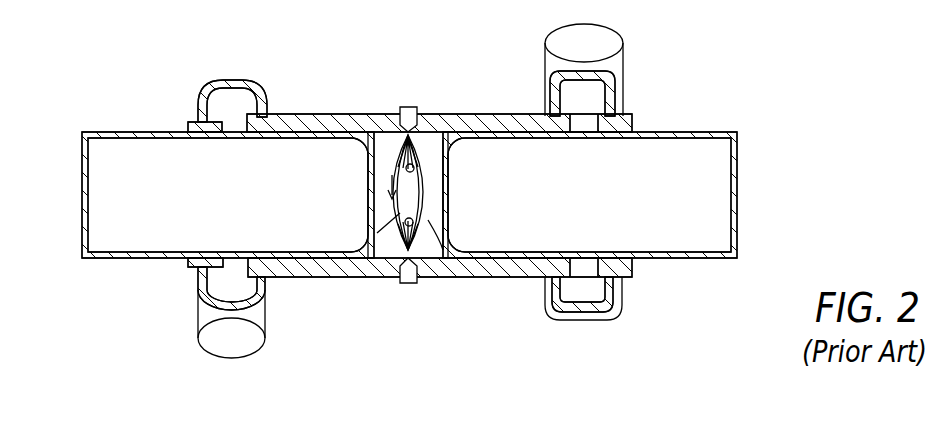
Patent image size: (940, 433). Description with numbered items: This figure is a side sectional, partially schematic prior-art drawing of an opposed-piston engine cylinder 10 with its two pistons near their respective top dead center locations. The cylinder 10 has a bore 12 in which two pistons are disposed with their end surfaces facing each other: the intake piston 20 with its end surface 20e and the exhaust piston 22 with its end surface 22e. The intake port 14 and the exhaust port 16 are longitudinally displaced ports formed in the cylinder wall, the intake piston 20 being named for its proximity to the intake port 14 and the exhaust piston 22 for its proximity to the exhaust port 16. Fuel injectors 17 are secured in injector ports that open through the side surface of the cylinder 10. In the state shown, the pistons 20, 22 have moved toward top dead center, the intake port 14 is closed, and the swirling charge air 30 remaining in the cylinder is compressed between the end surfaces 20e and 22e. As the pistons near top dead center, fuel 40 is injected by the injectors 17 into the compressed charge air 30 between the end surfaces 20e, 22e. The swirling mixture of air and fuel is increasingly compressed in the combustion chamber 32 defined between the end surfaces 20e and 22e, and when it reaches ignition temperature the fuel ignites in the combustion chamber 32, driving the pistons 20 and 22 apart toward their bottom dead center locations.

The cylinder 10 is at (317, 114).
The bore 12 is at (437, 136).
The intake port 14 is at (233, 131).
The exhaust port 16 is at (582, 130).
The fuel injector 17 is at (418, 108).
The intake piston 20 is at (110, 259).
The end surface of intake piston 20e is at (385, 159).
The exhaust piston 22 is at (683, 259).
The end surface of exhaust piston 22e is at (448, 228).
The swirl 30 is at (397, 227).
The combustion chamber 32 is at (433, 178).
The fuel 40 is at (390, 237).